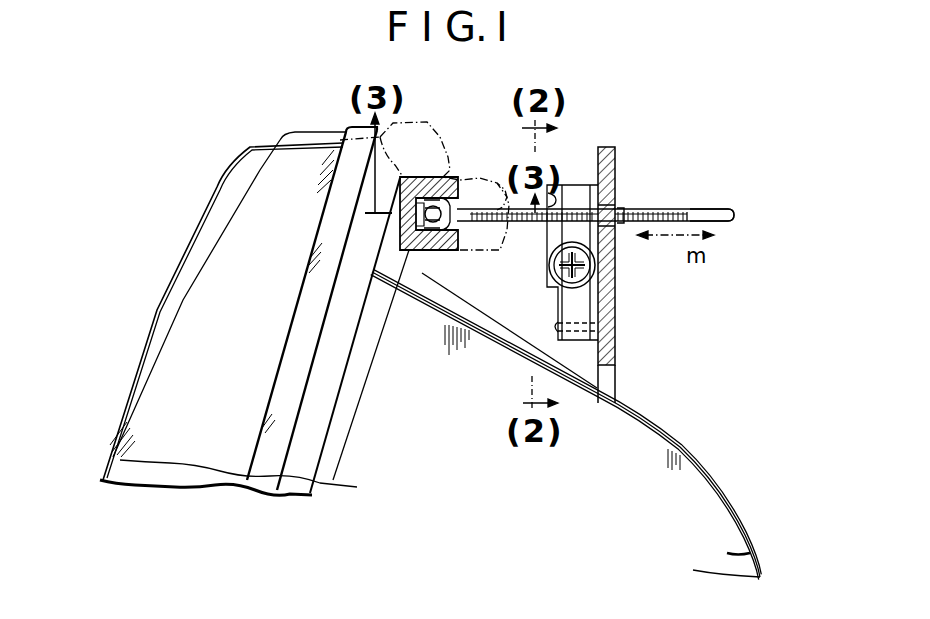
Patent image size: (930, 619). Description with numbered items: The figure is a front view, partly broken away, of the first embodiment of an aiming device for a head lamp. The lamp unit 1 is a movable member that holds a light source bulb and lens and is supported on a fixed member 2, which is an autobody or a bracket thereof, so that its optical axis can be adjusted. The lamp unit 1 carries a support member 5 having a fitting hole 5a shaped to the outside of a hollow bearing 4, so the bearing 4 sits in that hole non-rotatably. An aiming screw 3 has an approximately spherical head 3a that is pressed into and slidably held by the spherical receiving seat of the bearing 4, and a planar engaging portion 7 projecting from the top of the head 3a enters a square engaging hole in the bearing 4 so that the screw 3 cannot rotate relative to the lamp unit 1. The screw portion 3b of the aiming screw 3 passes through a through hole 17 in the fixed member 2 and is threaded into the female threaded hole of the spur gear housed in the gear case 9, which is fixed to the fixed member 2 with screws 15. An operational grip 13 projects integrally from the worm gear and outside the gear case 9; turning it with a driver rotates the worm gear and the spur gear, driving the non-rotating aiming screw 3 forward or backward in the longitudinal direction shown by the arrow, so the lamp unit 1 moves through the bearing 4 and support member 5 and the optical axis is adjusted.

The lamp unit 1 is at (215, 190).
The fixed member 2 is at (617, 350).
The aiming screw 3 is at (637, 208).
The head 3a is at (437, 247).
The screw portion 3b is at (666, 209).
The hollow bearing 4 is at (440, 270).
The support member 5 is at (405, 176).
The fitting hole 5a is at (463, 180).
The engaging portion 7 is at (402, 232).
The gear case 9 is at (580, 305).
The operational grip 13 is at (586, 272).
The screws 15 is at (556, 327).
The through hole 17 is at (621, 208).